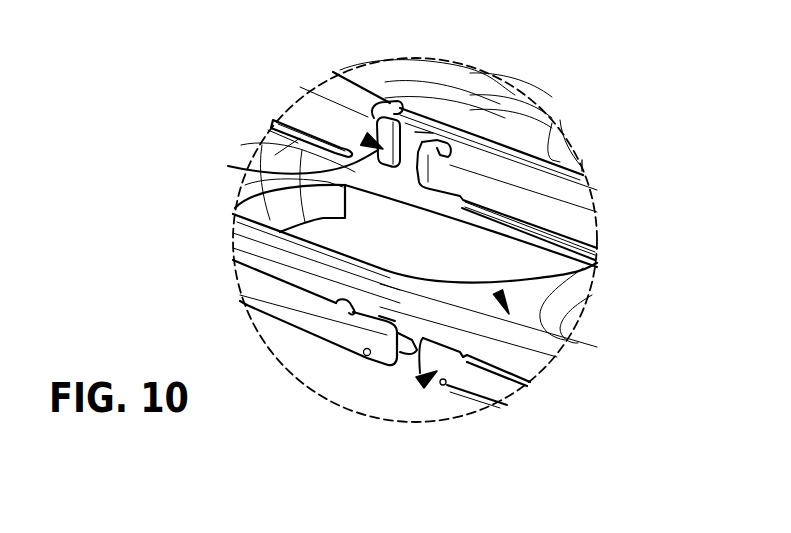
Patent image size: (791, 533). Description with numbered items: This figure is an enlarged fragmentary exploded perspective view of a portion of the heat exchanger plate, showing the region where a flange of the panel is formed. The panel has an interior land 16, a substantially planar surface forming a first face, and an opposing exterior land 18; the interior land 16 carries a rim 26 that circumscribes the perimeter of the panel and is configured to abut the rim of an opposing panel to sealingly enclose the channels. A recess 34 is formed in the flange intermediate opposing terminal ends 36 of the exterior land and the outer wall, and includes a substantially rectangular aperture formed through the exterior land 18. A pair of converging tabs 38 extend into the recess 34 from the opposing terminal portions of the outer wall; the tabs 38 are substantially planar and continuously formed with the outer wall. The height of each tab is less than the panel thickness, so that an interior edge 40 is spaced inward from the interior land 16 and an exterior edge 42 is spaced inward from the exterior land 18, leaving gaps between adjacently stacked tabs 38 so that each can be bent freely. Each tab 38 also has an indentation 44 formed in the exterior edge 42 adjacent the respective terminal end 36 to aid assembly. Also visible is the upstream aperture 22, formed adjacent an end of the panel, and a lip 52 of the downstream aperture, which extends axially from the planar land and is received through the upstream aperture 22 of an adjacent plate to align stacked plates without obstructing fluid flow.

The interior land 16 is at (498, 293).
The exterior land 18 is at (343, 76).
The upstream aperture 22 is at (410, 366).
The rim 26 is at (278, 148).
The recess 34 is at (426, 140).
The terminal ends 36 is at (425, 132).
The tabs 38 is at (364, 139).
The interior edge 40 is at (381, 314).
The exterior edge 42 is at (388, 103).
The indentation 44 is at (367, 353).
The lip 52 is at (245, 216).